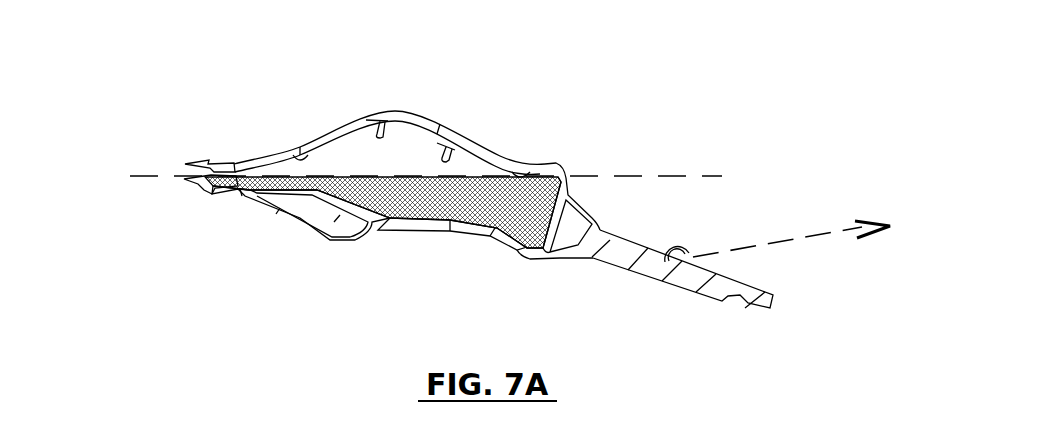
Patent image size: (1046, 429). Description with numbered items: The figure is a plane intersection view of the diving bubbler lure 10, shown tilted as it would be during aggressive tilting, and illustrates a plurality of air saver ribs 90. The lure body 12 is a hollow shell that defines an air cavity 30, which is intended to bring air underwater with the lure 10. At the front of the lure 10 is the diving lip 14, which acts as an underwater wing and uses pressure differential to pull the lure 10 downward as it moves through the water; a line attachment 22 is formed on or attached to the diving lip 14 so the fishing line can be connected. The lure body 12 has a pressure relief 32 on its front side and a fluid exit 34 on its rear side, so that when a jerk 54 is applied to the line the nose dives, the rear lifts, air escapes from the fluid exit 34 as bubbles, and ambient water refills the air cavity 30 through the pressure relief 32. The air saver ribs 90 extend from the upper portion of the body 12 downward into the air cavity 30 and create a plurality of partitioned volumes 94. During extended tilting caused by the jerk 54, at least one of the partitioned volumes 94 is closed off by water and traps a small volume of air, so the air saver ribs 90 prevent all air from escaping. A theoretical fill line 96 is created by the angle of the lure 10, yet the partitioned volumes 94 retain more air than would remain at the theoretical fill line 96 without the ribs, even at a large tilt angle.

The lure 10 is at (222, 89).
The lure body 12 is at (330, 241).
The diving lip 14 is at (618, 270).
The line attachment 22 is at (678, 245).
The air cavity 30 is at (293, 152).
The pressure relief 32 is at (527, 248).
The fluid exit 34 is at (194, 172).
The jerk 54 is at (818, 233).
The air saver ribs 90 is at (351, 126).
The partitioned volumes 94 is at (432, 140).
The theoretical fill line 96 is at (640, 176).